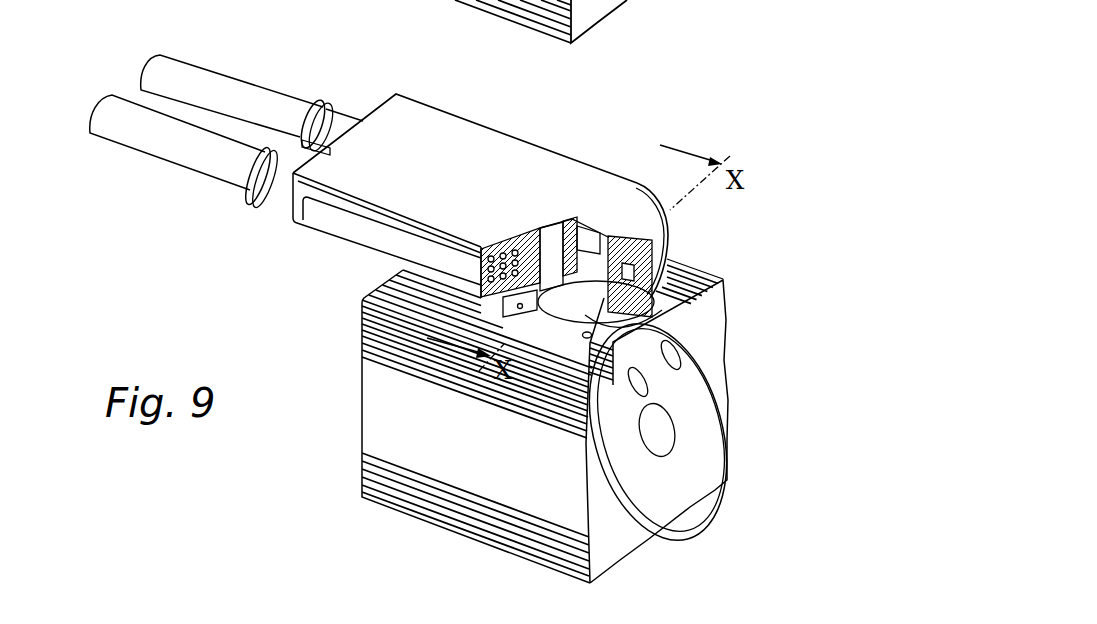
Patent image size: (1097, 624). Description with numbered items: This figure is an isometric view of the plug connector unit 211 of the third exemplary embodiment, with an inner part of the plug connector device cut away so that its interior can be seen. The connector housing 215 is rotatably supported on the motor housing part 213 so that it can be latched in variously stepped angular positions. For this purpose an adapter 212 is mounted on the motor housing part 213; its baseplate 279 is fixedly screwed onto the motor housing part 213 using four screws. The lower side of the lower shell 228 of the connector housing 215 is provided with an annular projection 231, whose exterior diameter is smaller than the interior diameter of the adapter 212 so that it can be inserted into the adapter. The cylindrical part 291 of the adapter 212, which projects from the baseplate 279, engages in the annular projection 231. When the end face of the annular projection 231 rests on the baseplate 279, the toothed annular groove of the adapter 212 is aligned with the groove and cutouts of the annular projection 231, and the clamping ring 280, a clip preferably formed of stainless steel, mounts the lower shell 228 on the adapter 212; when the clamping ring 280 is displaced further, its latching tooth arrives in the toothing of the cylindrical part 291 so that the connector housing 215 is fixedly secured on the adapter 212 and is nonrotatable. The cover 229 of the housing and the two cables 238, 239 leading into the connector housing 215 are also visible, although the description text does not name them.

The plug connector unit 211 is at (772, 237).
The adapter 212 is at (364, 313).
The motor housing part 213 is at (733, 324).
The connector housing 215 is at (603, 167).
The lower shell 228 is at (305, 236).
The cover 229 is at (473, 138).
The annular projection 231 is at (502, 249).
The first cable 238 is at (182, 72).
The second cable 239 is at (110, 128).
The baseplate 279 is at (488, 292).
The clamping ring 280 is at (645, 303).
The cylindrical part 291 is at (588, 305).